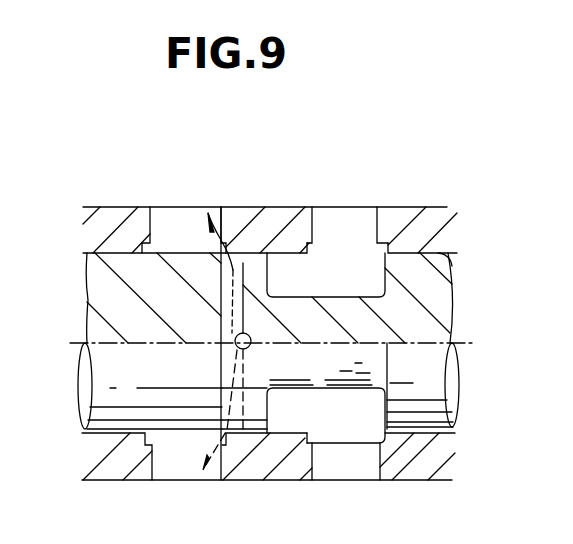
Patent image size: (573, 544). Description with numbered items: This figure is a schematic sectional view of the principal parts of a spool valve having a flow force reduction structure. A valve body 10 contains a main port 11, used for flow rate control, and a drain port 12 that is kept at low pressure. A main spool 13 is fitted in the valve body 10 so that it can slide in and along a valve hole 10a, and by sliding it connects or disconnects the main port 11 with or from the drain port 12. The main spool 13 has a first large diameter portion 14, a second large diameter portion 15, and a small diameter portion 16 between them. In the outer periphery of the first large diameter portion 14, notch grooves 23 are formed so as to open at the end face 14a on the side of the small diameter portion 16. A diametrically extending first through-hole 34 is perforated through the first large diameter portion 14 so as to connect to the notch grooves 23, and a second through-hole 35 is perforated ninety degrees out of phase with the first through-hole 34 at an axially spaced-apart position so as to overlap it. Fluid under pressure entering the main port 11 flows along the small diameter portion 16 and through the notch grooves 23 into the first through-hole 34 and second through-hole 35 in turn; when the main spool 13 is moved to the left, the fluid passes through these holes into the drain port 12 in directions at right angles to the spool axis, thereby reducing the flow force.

The valve body 10 is at (433, 207).
The valve hole 10a is at (450, 265).
The main port 11 is at (338, 262).
The drain port 12 is at (157, 217).
The main spool 13 is at (353, 398).
The first large diameter portion 14 is at (88, 290).
The end face 14a is at (267, 274).
The second large diameter portion 15 is at (440, 373).
The small diameter portion 16 is at (322, 382).
The notch grooves 23 is at (258, 353).
The first through-hole 34 is at (233, 344).
The second through-hole 35 is at (222, 302).